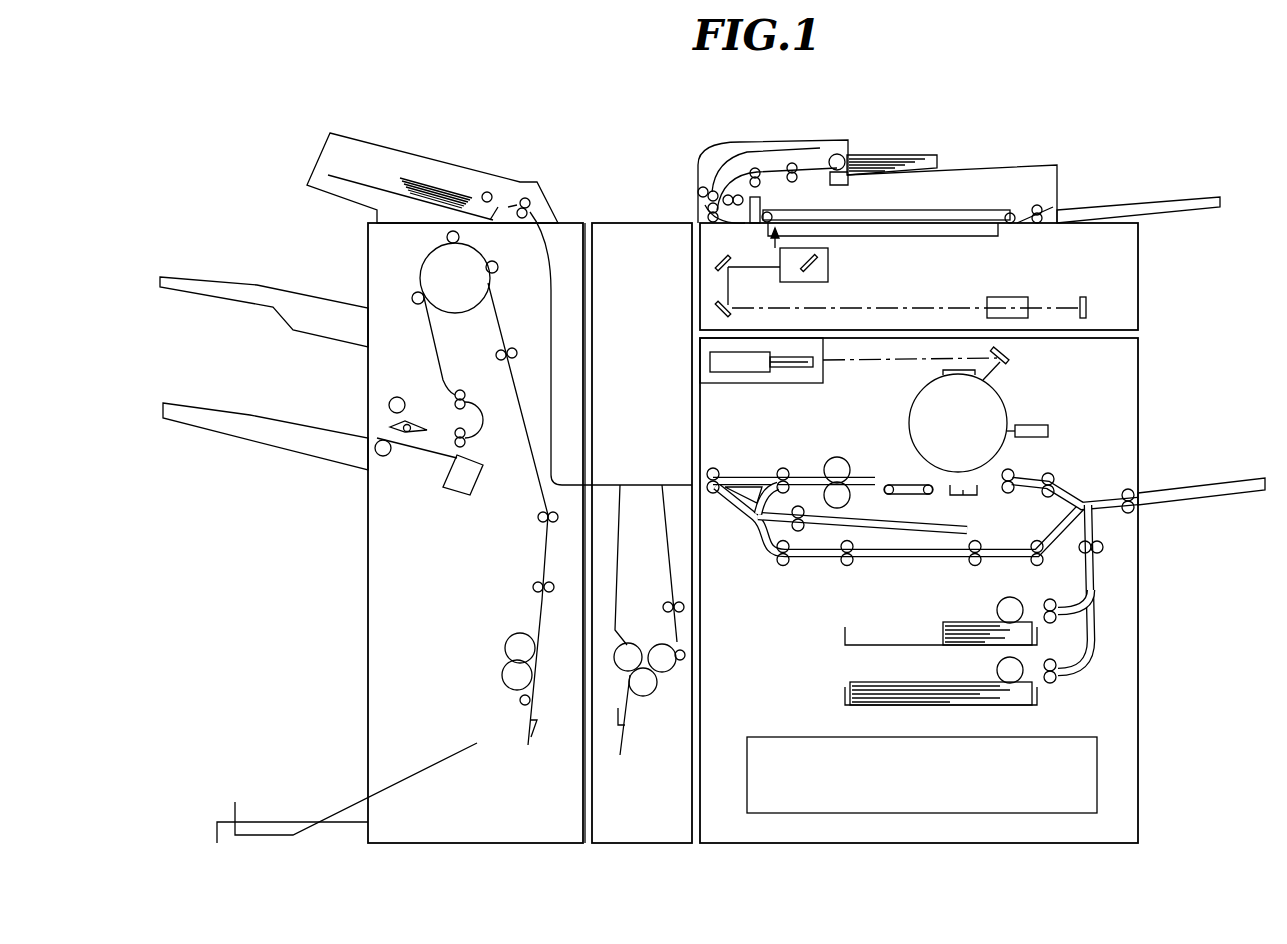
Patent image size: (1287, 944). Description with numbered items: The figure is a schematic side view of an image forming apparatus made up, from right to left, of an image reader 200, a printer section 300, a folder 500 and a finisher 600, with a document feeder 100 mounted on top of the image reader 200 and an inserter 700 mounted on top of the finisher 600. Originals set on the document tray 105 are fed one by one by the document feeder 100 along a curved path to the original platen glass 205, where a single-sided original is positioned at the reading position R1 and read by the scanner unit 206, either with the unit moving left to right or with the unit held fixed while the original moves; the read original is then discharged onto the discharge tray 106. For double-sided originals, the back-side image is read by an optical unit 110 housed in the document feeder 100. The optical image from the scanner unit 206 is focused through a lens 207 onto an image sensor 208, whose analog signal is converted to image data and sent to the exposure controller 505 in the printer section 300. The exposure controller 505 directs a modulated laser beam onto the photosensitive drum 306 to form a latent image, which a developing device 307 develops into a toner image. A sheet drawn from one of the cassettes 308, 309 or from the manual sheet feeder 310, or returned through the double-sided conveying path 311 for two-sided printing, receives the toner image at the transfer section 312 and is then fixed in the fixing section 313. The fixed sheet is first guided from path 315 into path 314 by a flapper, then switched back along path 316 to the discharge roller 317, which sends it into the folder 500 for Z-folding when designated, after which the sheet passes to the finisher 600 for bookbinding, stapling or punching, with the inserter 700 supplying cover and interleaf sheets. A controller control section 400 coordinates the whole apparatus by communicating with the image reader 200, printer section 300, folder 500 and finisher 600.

The document feeder 100 is at (785, 140).
The document tray 105 is at (957, 168).
The discharge tray 106 is at (1130, 198).
The optical unit 110 is at (762, 199).
The image reader 200 is at (1140, 288).
The original platen glass 205 is at (983, 227).
The scanner unit 206 is at (828, 262).
The lens 207 is at (1013, 297).
The image sensor 208 is at (1083, 297).
The reading position R1 is at (758, 248).
The printer section 300 is at (1140, 725).
The photosensitive drum 306 is at (917, 397).
The developing device 307 is at (1037, 425).
The cassette 308 is at (845, 636).
The cassette 309 is at (845, 695).
The manual sheet feeder 310 is at (1200, 508).
The double-sided conveying path 311 is at (815, 560).
The transfer section 312 is at (973, 495).
The fixing section 313 is at (842, 458).
The path 314 is at (902, 527).
The path 315 is at (770, 480).
The path 316 is at (735, 503).
The discharge roller 317 is at (730, 455).
The controller control section 400 is at (1073, 735).
The folder 500 is at (642, 220).
The exposure controller 505 is at (755, 383).
The finisher 600 is at (368, 638).
The inserter 700 is at (493, 180).